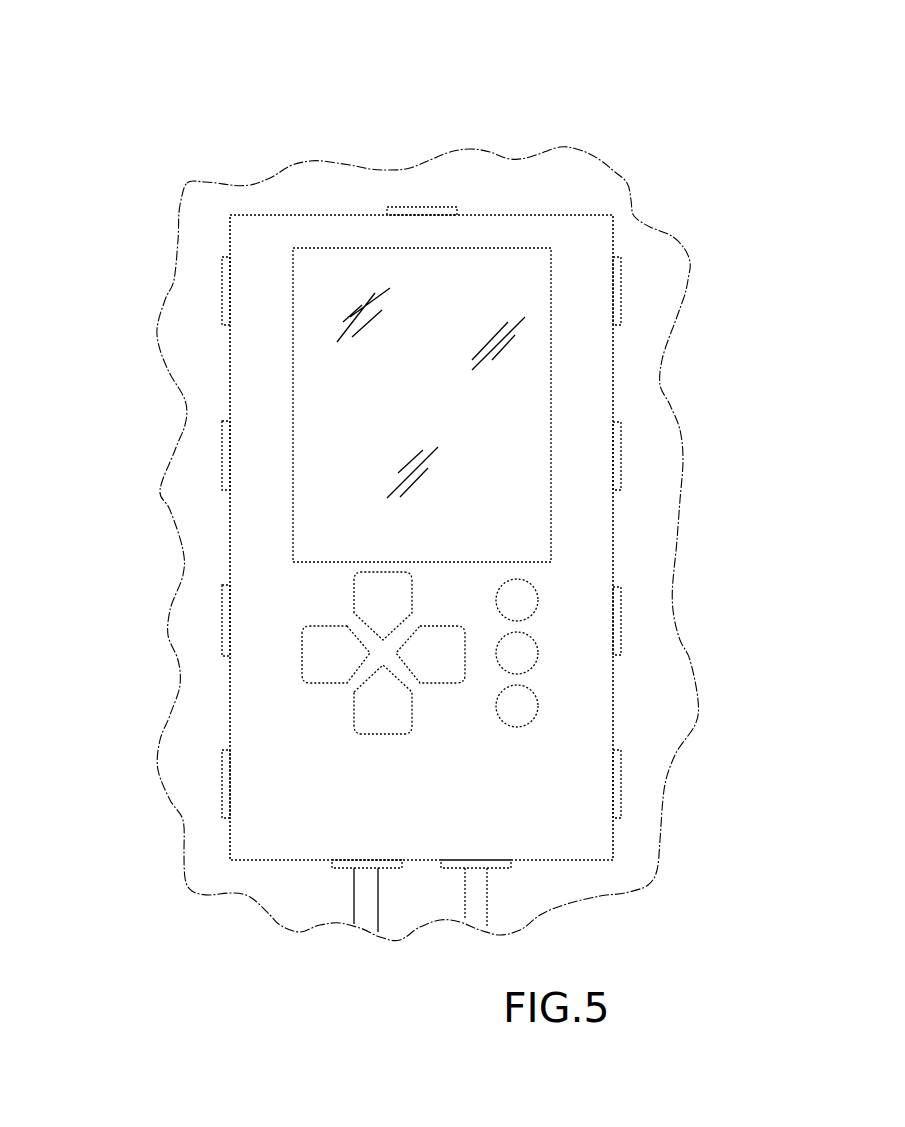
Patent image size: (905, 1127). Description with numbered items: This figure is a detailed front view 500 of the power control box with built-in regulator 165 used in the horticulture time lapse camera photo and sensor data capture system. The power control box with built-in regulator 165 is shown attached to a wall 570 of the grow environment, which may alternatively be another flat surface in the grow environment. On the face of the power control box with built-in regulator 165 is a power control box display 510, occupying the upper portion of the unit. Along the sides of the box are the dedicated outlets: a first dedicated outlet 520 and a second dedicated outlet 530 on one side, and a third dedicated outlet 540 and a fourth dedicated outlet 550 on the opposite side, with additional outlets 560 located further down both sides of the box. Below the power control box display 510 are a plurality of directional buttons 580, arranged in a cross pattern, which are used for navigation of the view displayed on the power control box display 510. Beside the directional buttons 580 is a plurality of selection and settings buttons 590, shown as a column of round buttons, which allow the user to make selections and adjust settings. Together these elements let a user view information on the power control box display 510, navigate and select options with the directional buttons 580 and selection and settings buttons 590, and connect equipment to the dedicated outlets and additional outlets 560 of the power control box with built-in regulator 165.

The detailed front view 500 is at (388, 470).
The power control box with built-in regulator 165 is at (603, 237).
The power control box display 510 is at (364, 262).
The first dedicated outlet 520 is at (224, 284).
The second dedicated outlet 530 is at (224, 448).
The third dedicated outlet 540 is at (617, 290).
The fourth dedicated outlet 550 is at (617, 470).
The additional outlets 560 is at (224, 620).
The wall 570 is at (690, 267).
The directional buttons 580 is at (333, 698).
The selection and settings buttons 590 is at (493, 727).